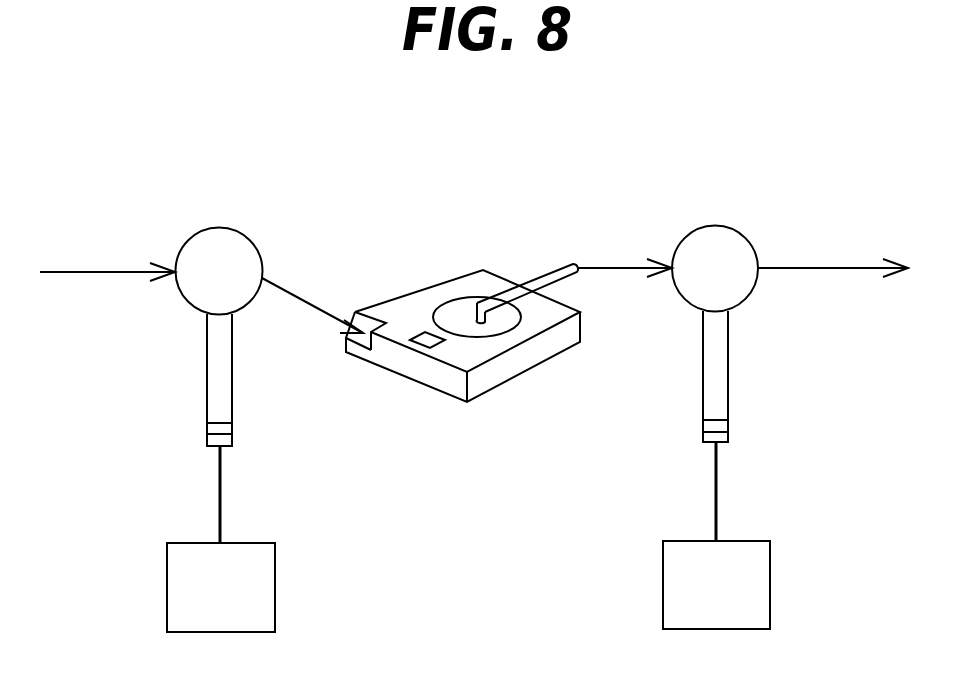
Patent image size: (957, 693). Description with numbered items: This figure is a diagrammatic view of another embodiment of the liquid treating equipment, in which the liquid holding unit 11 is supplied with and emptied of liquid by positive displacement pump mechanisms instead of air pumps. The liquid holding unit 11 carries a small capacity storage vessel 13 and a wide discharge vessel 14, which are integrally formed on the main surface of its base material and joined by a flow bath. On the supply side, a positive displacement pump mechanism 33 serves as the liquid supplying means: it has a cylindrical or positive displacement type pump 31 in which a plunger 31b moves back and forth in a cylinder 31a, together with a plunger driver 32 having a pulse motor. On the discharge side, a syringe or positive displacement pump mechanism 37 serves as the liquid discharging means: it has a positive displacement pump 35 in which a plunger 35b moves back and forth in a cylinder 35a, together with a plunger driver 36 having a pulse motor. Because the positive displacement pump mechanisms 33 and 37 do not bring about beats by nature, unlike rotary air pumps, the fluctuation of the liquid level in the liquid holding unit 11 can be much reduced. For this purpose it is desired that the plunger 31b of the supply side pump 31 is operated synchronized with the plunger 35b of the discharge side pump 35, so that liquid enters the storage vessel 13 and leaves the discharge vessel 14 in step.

The liquid holding unit 11 is at (465, 412).
The storage vessel 13 is at (418, 333).
The discharge vessel 14 is at (463, 315).
The positive displacement pump 31 is at (223, 404).
The cylinder 31a is at (207, 346).
The plunger 31b is at (210, 417).
The plunger driver 32 is at (167, 588).
The positive displacement pump mechanism 33 is at (237, 178).
The positive displacement pump 35 is at (732, 390).
The cylinder 35a is at (703, 334).
The plunger 35b is at (715, 418).
The plunger driver 36 is at (770, 582).
The positive displacement pump mechanism 37 is at (738, 169).